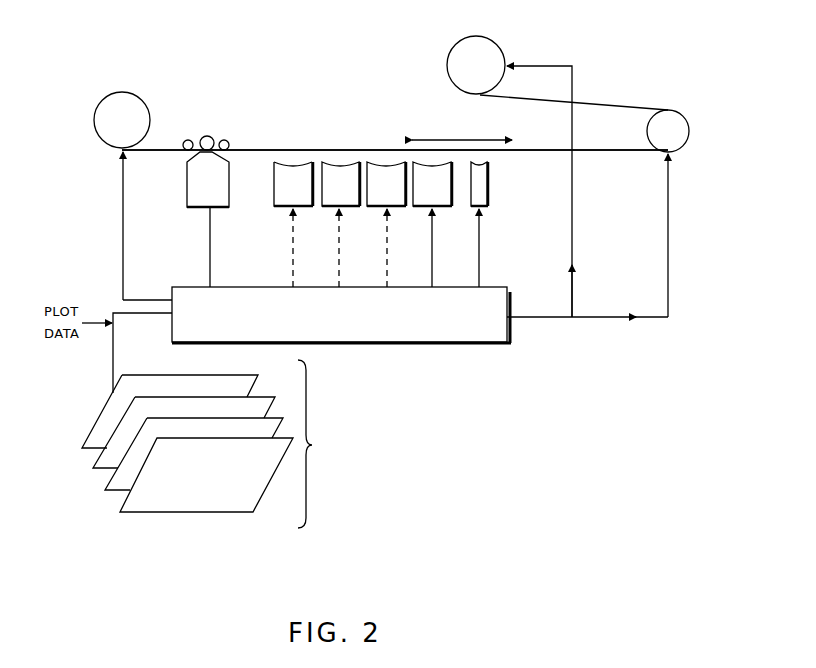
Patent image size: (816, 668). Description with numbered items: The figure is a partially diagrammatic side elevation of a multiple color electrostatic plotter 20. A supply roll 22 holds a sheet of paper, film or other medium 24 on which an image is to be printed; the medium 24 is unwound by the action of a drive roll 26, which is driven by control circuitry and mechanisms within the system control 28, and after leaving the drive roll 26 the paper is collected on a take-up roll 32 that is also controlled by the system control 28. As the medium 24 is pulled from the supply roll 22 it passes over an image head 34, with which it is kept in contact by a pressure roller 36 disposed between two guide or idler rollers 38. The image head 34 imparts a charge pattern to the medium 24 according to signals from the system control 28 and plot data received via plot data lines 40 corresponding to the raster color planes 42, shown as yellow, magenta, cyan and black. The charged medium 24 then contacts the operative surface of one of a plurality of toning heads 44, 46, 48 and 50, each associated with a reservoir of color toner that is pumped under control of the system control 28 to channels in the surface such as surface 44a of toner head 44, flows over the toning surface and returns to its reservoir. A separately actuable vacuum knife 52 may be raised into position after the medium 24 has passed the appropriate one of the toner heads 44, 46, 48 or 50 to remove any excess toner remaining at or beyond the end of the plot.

The electrostatic plotter 20 is at (372, 100).
The supply roll 22 is at (100, 102).
The medium 24 is at (158, 150).
The drive roll 26 is at (678, 112).
The system control 28 is at (487, 343).
The take-up roll 32 is at (487, 40).
The image head 34 is at (187, 180).
The pressure roller 36 is at (212, 138).
The guide or idler rollers 38 is at (190, 140).
The plot data lines 40 is at (113, 372).
The raster color planes 42 is at (339, 444).
The toner head 44 is at (274, 203).
The surface of the toner head 44a is at (287, 165).
The toner head 46 is at (326, 203).
The toner head 48 is at (372, 203).
The toner head 50 is at (418, 203).
The vacuum knife 52 is at (490, 186).